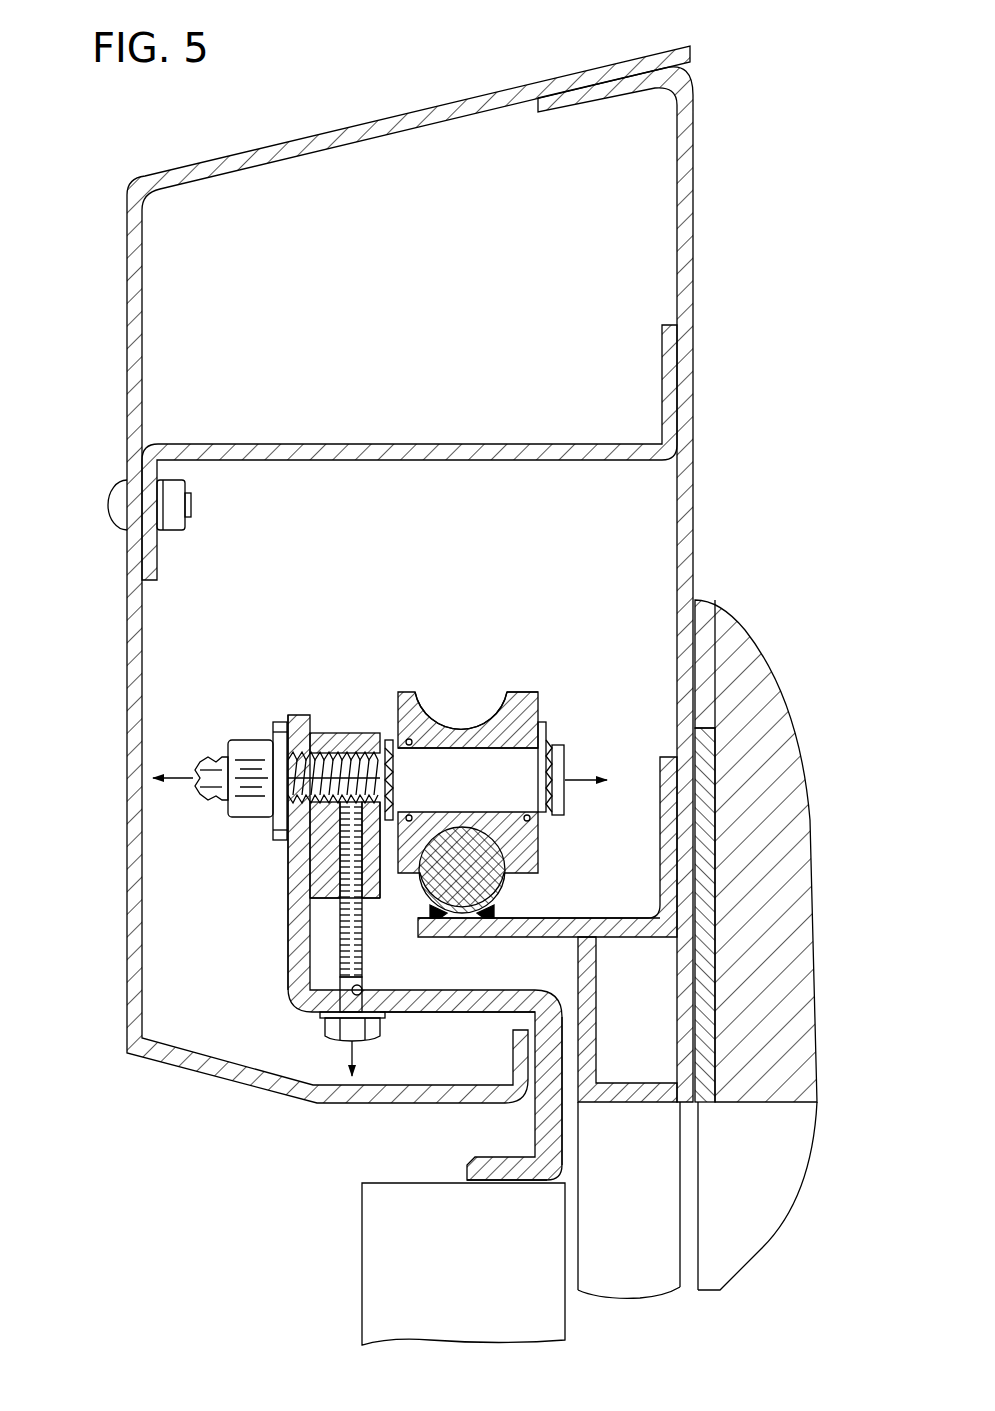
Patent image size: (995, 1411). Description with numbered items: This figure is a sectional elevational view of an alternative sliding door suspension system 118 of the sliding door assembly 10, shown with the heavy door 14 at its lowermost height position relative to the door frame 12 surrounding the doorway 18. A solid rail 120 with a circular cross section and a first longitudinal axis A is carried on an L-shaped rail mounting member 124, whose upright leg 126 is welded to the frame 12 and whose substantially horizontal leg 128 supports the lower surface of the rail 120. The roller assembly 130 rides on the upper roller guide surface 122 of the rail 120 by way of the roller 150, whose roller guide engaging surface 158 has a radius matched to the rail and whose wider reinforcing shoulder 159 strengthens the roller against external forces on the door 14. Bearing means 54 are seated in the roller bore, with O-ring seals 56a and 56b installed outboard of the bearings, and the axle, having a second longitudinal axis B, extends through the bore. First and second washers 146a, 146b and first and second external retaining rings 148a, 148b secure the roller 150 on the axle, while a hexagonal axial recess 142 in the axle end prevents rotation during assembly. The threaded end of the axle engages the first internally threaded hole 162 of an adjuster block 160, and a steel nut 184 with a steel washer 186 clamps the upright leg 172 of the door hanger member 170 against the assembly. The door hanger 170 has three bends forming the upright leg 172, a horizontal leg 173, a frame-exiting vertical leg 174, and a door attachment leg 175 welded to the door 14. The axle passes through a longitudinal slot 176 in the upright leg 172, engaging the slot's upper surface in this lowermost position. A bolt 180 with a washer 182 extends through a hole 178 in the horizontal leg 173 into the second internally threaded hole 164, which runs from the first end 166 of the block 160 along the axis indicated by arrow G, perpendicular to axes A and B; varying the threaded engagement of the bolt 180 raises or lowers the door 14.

The sliding door assembly 10 is at (90, 1188).
The door frame 12 is at (700, 932).
The heavy door 14 is at (427, 1212).
The doorway 18 is at (635, 1272).
The bearing means 54 is at (466, 738).
The O-ring seal 56a is at (433, 735).
The O-ring seal 56b is at (548, 812).
The sliding door suspension system 118 is at (262, 602).
The solid rail 120 is at (492, 880).
The upper roller guide surface 122 is at (507, 858).
The L-shaped rail mounting member 124 is at (605, 952).
The upright leg 126 is at (670, 852).
The horizontal leg 128 is at (592, 918).
The roller assembly 130 is at (547, 833).
The hexagonal axial recess 142 is at (197, 782).
The first washer 146a is at (390, 745).
The second washer 146b is at (553, 738).
The first external retaining ring 148a is at (490, 754).
The second external retaining ring 148b is at (565, 752).
The roller 150 is at (525, 669).
The roller guide engaging surface 158 is at (475, 742).
The reinforcing shoulder 159 is at (518, 692).
The adjuster block 160 is at (301, 806).
The first internally threaded hole 162 is at (336, 752).
The second internally threaded hole 164 is at (338, 895).
The first end 166 is at (374, 900).
The door hanger member 170 is at (420, 947).
The upright leg 172 is at (296, 933).
The horizontal leg 173 is at (480, 1005).
The frame-exiting vertical leg 174 is at (565, 1060).
The door attachment leg 175 is at (487, 1170).
The longitudinal slot 176 is at (302, 843).
The hole 178 is at (364, 982).
The bolt 180 is at (337, 1030).
The washer 182 is at (322, 1015).
The steel nut 184 is at (250, 748).
The steel washer 186 is at (278, 740).
The first longitudinal axis A is at (462, 872).
The second longitudinal axis B is at (583, 772).
The longitudinal axis of second hole G is at (360, 1050).